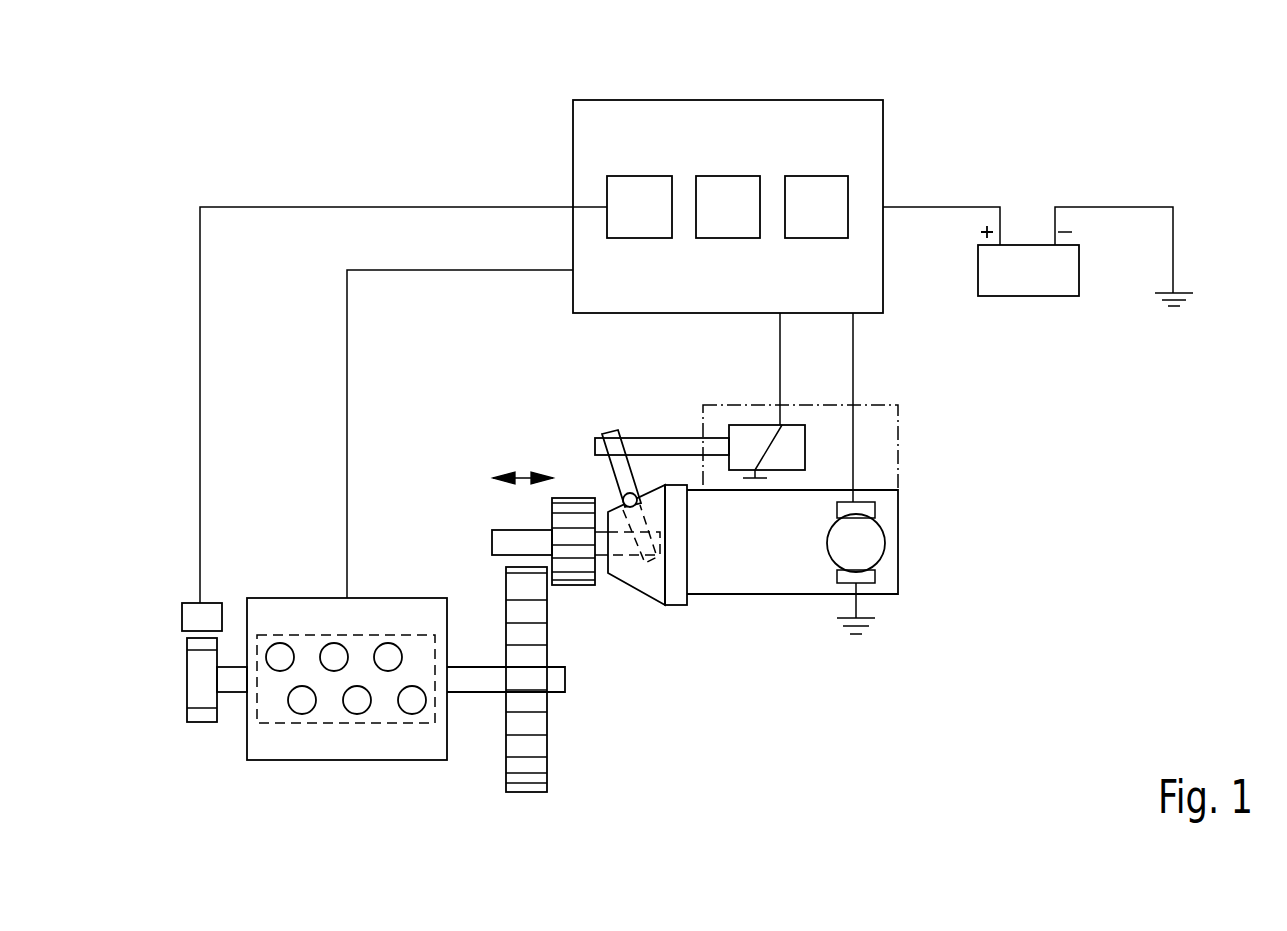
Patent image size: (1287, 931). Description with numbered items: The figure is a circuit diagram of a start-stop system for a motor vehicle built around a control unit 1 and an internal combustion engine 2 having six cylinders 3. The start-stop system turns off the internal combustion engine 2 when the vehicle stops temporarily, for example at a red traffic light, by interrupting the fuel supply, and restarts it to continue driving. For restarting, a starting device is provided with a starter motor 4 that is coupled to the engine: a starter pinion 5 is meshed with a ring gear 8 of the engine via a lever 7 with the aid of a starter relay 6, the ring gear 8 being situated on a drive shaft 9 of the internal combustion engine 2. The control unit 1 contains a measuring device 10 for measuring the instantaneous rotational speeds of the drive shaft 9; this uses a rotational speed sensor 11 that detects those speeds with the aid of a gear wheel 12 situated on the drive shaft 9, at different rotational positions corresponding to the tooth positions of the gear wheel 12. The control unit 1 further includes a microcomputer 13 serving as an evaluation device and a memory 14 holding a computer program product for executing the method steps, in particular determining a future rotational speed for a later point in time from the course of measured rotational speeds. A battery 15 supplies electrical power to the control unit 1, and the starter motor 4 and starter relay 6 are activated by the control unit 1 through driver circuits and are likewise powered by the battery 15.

The control unit 1 is at (638, 100).
The internal combustion engine 2 is at (368, 762).
The cylinders 3 is at (296, 724).
The starter motor 4 is at (885, 541).
The starter pinion 5 is at (577, 588).
The starter relay 6 is at (898, 448).
The lever 7 is at (622, 473).
The ring gear 8 is at (537, 743).
The drive shaft 9 is at (228, 683).
The measuring device 10 is at (640, 176).
The rotational speed sensor 11 is at (184, 617).
The gear wheel 12 is at (190, 680).
The microcomputer 13 is at (727, 176).
The memory 14 is at (816, 176).
The battery 15 is at (1028, 297).